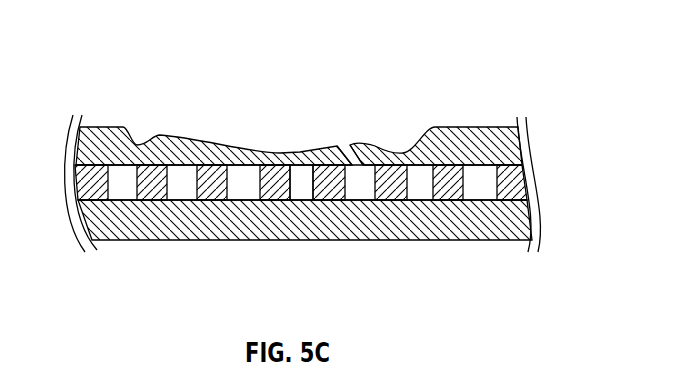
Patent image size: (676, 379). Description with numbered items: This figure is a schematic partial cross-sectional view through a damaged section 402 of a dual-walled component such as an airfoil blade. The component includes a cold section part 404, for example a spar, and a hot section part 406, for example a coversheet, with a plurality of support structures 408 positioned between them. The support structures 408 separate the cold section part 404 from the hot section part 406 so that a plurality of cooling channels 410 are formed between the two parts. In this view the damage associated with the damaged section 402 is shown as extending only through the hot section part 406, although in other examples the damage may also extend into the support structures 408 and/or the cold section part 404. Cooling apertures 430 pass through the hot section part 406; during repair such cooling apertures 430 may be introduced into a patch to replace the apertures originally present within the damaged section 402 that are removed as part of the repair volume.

The damaged section 402 is at (158, 118).
The cold section part 404 is at (380, 225).
The hot section part 406 is at (488, 127).
The support structures 408 is at (390, 183).
The cooling channels 410 is at (303, 182).
The cooling apertures 430 is at (346, 152).